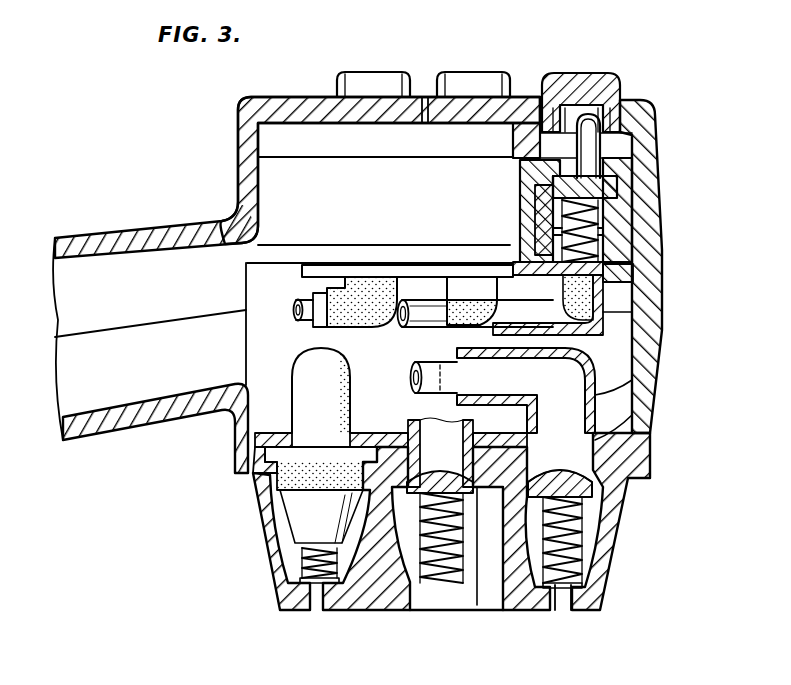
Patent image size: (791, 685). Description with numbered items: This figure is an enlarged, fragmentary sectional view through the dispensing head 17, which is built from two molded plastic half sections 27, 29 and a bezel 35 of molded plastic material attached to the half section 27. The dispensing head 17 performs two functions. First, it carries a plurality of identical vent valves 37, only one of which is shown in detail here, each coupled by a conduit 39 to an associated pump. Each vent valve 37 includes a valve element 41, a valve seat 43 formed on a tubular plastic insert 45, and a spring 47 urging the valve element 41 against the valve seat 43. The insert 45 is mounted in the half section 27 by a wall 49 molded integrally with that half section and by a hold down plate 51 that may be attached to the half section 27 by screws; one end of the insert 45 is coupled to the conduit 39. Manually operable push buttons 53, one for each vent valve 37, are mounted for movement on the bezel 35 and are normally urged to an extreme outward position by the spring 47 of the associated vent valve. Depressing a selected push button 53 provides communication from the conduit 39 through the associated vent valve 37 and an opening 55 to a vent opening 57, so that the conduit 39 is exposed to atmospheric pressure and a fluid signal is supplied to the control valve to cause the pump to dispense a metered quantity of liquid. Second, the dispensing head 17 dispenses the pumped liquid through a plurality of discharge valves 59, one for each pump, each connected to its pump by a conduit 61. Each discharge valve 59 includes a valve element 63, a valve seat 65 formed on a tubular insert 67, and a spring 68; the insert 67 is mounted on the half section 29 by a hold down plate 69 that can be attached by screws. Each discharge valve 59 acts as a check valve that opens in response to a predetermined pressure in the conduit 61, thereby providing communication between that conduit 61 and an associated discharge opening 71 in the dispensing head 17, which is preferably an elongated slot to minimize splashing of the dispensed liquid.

The dispensing head 17 is at (660, 102).
The half section 27 is at (118, 236).
The half section 29 is at (112, 415).
The bezel 35 is at (245, 123).
The vent valve 37 is at (614, 205).
The conduit 39 is at (408, 300).
The valve element 41 is at (598, 160).
The valve seat 43 is at (522, 182).
The plastic insert 45 is at (603, 228).
The spring 47 is at (606, 246).
The wall 49 is at (526, 200).
The hold down plate 51 is at (620, 282).
The push button 53 is at (372, 80).
The opening 55 is at (527, 162).
The vent opening 57 is at (425, 100).
The discharge valve 59 is at (296, 518).
The conduit 61 is at (440, 365).
The valve element 63 is at (582, 530).
The valve seat 65 is at (600, 500).
The tubular insert 67 is at (597, 400).
The spring 68 is at (578, 552).
The hold down plate 69 is at (612, 430).
The discharge opening 71 is at (312, 598).